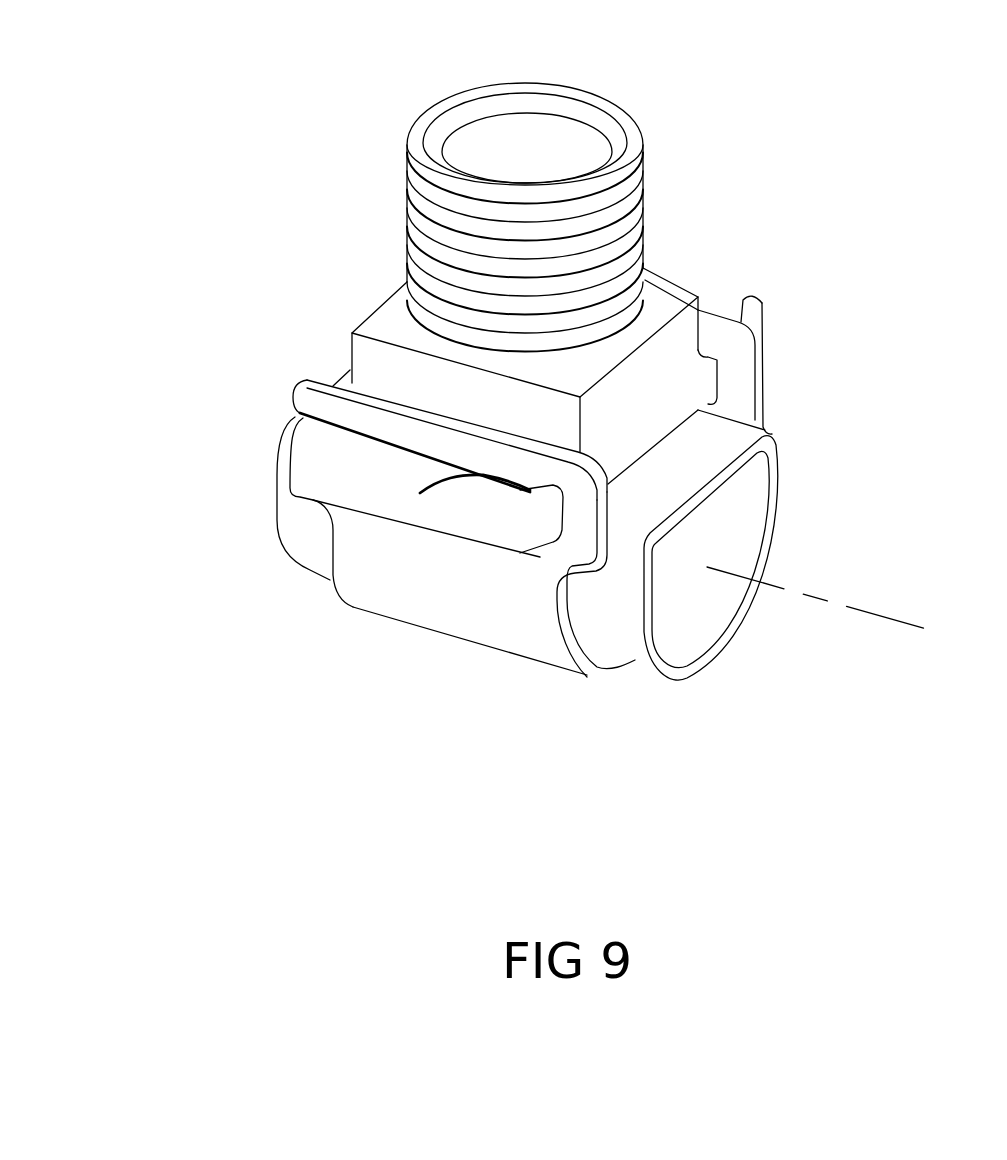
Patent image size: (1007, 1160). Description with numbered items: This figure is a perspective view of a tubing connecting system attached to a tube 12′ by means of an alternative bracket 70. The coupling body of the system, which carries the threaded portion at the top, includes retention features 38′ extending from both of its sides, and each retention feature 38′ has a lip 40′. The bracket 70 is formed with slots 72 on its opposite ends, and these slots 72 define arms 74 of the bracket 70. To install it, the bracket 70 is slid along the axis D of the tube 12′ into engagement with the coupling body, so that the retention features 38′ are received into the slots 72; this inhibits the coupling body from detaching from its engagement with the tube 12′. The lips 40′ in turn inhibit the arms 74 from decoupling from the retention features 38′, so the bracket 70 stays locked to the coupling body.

The tube 12′ is at (777, 507).
The bracket 70 is at (600, 677).
The arms 74 is at (306, 402).
The lip 40′ is at (420, 493).
The retention features 38′ is at (548, 548).
The slots 72 is at (563, 513).
The axis D is at (841, 611).